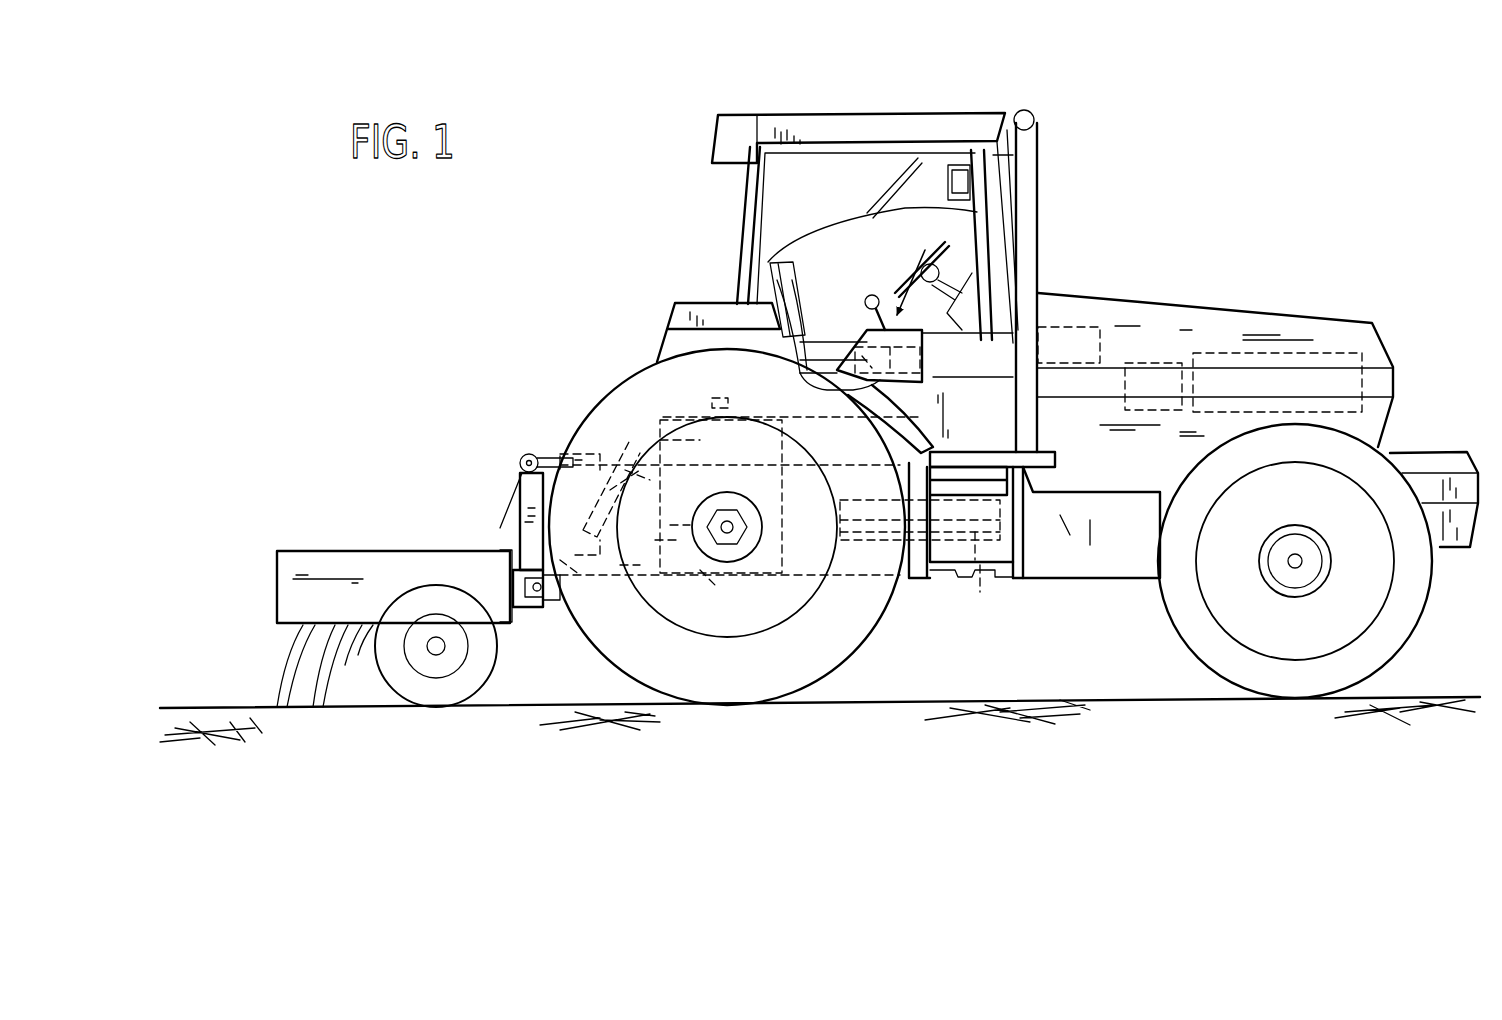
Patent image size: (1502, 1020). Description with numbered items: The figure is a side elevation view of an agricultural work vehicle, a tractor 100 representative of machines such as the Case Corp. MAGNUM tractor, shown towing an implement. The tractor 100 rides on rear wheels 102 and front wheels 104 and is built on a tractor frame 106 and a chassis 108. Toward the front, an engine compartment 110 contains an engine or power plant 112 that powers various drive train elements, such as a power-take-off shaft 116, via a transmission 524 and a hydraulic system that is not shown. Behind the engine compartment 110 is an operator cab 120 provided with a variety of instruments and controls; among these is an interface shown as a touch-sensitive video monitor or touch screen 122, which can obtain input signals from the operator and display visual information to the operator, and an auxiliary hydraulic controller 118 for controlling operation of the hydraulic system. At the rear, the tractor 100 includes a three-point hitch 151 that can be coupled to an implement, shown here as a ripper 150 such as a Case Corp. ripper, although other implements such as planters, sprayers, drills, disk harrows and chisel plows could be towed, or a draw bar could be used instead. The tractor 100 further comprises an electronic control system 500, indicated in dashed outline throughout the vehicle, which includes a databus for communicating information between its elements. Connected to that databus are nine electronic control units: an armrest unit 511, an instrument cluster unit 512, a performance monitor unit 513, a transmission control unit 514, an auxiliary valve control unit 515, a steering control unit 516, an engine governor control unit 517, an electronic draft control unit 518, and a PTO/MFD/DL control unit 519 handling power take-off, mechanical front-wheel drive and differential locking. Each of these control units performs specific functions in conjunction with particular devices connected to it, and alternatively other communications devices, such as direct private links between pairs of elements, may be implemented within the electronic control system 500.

The tractor 100 is at (1136, 130).
The rear wheels 102 is at (733, 690).
The front wheels 104 is at (1289, 690).
The tractor frame 106 is at (948, 578).
The chassis 108 is at (1070, 580).
The engine compartment 110 is at (1353, 332).
The engine 112 is at (1347, 381).
The power-take-off shaft 116 is at (628, 573).
The auxiliary hydraulic controller 118 is at (940, 245).
The operator cab 120 is at (846, 100).
The touch screen 122 is at (953, 163).
The ripper 150 is at (292, 520).
The three-point hitch 151 is at (549, 446).
The electronic control system 500 is at (1148, 220).
The armrest unit 511 is at (862, 343).
The instrument cluster unit 512 is at (968, 182).
The performance monitor unit 513 is at (1070, 337).
The transmission control unit 514 is at (866, 515).
The auxiliary valve control unit 515 is at (922, 357).
The steering control unit 516 is at (1040, 294).
The engine governor control unit 517 is at (1128, 378).
The electronic draft control unit 518 is at (660, 506).
The PTO/MFD/DL control unit 519 is at (660, 437).
The transmission 524 is at (975, 560).